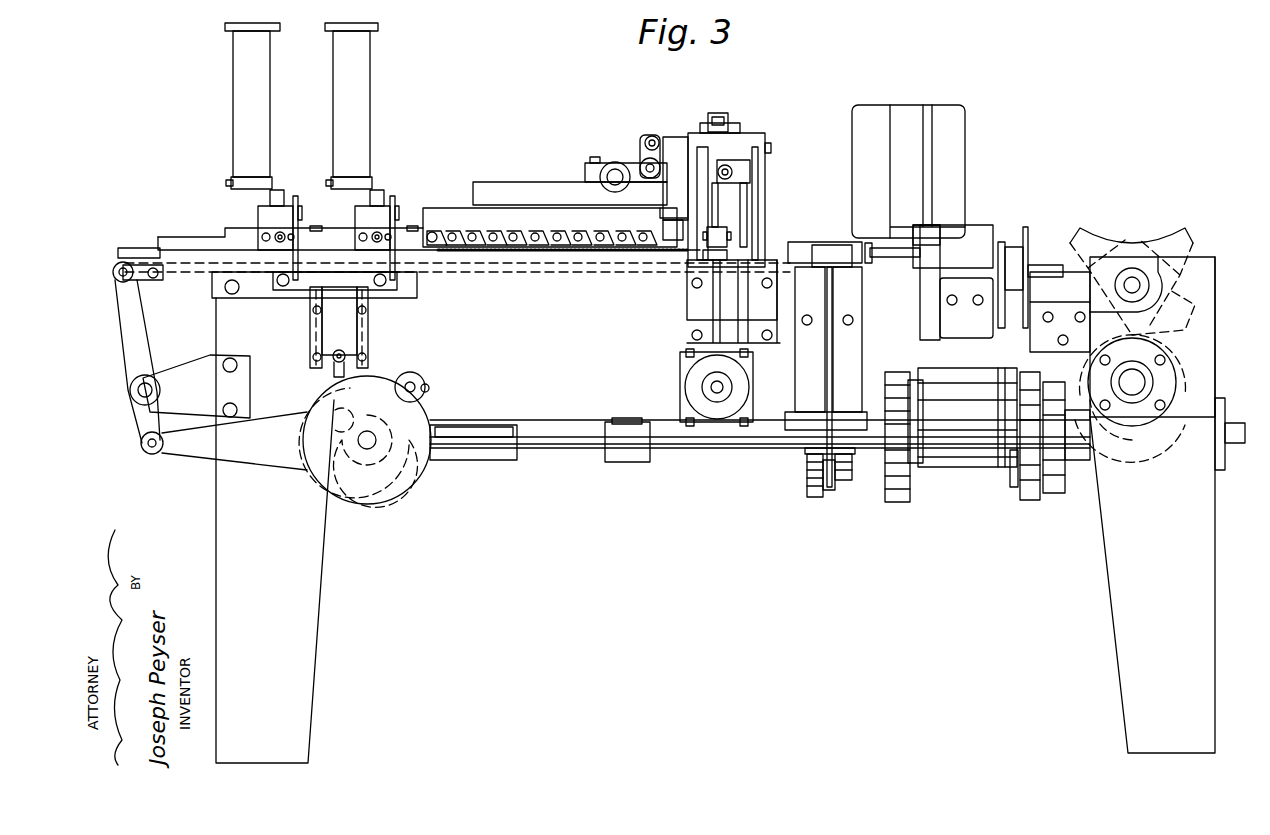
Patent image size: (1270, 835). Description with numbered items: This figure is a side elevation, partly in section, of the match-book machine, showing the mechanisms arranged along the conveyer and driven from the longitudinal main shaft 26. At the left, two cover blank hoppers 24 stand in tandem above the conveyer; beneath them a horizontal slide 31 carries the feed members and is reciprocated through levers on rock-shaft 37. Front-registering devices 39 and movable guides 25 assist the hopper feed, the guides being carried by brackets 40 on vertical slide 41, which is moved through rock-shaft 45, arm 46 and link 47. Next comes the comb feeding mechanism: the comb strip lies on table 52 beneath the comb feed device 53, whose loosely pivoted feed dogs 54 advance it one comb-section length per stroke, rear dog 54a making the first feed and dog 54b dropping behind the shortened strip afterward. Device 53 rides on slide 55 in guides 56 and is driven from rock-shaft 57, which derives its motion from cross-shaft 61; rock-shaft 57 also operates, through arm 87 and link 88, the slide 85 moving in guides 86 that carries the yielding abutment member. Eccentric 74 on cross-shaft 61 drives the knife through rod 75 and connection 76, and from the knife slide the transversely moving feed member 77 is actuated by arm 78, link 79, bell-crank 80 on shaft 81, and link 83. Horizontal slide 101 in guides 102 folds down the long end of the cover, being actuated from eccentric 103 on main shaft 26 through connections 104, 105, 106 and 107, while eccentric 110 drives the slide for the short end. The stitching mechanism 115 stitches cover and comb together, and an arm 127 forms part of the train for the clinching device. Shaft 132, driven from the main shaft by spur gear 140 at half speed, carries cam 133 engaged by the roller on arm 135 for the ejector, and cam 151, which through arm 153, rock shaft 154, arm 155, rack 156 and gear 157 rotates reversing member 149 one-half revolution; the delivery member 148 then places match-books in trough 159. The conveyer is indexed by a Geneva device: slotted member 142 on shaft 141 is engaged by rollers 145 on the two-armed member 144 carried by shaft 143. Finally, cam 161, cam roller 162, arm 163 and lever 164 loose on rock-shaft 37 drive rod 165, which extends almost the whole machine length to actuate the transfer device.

The cover blank hoppers 24 is at (332, 112).
The brackets 40 is at (295, 198).
The movable guides or ejectors 25 is at (305, 206).
The front-registering devices 39 is at (317, 226).
The horizontal slide 31 is at (130, 248).
The rod 165 is at (190, 276).
The lever 164 is at (128, 345).
The rock-shaft 37 is at (140, 392).
The arm 163 is at (195, 450).
The cam roller 162 is at (325, 447).
The cam 161 is at (337, 500).
The arm 127 is at (372, 440).
The link 47 is at (333, 372).
The vertical slide 41 is at (340, 330).
The arm 46 is at (408, 372).
The rock-shaft 45 is at (427, 385).
The comb feed device 53 is at (550, 227).
The rear dog 54a is at (432, 231).
The dog 54b is at (470, 233).
The feed dogs 54 is at (512, 270).
The table or support 52 is at (580, 252).
The slide 55 is at (658, 212).
The guides 56 is at (490, 195).
The rock-shaft 57 is at (612, 170).
The arm 87 is at (646, 160).
The link 88 is at (650, 135).
The guides 86 is at (670, 137).
The slide 85 is at (697, 133).
The link 79 is at (718, 113).
The arm 78 is at (728, 118).
The shaft 81 is at (771, 146).
The connection 76 is at (750, 170).
The bell-crank 80 is at (719, 200).
The rod 75 is at (748, 210).
The link 83 is at (728, 236).
The feed member 77 is at (730, 256).
The guides 102 is at (803, 242).
The horizontal slide 101 is at (830, 250).
The connection 106 is at (835, 340).
The connection 107 is at (833, 300).
The eccentric 103 is at (808, 455).
The connection 104 is at (810, 480).
The eccentric 110 is at (845, 470).
The connection 105 is at (838, 485).
The stitching mechanism 115 is at (908, 171).
The rack 156 is at (935, 248).
The gear 157 is at (925, 240).
The arm 155 is at (925, 310).
The reversing member 149 is at (940, 255).
The delivery member 148 is at (1002, 245).
The trough 159 is at (1030, 232).
The rock shaft 154 is at (897, 375).
The main shaft 26 is at (562, 450).
The eccentric 74 is at (700, 370).
The cross-shaft 61 is at (715, 392).
The shaft 132 is at (743, 450).
The cam 151 is at (895, 500).
The arm 153 is at (905, 415).
The arm 135 is at (1012, 480).
The cam 133 is at (1030, 500).
The spur gear 140 is at (1053, 493).
The shaft 141 is at (1133, 280).
The slotted member 142 is at (1160, 240).
The shaft 143 is at (1145, 382).
The two-armed member 144 is at (1168, 352).
The rollers 145 is at (1185, 335).